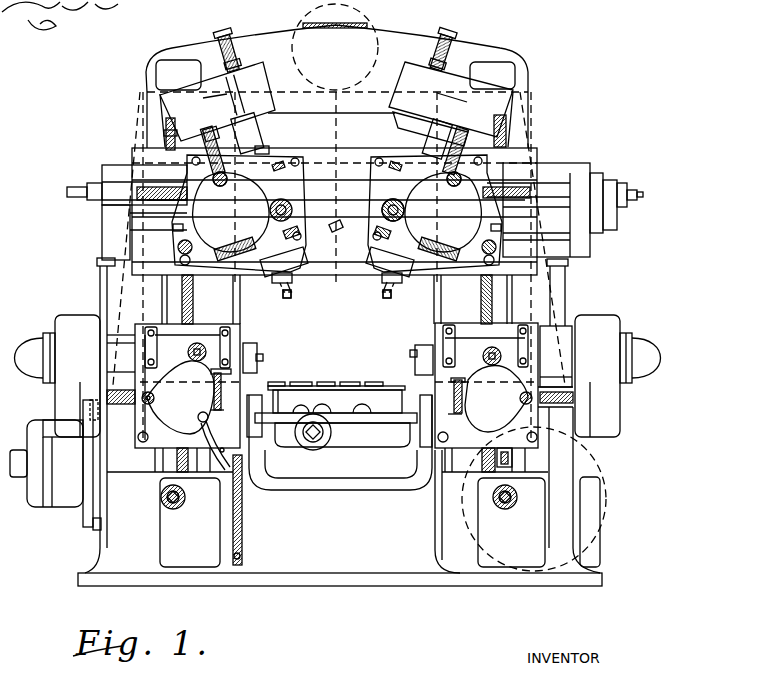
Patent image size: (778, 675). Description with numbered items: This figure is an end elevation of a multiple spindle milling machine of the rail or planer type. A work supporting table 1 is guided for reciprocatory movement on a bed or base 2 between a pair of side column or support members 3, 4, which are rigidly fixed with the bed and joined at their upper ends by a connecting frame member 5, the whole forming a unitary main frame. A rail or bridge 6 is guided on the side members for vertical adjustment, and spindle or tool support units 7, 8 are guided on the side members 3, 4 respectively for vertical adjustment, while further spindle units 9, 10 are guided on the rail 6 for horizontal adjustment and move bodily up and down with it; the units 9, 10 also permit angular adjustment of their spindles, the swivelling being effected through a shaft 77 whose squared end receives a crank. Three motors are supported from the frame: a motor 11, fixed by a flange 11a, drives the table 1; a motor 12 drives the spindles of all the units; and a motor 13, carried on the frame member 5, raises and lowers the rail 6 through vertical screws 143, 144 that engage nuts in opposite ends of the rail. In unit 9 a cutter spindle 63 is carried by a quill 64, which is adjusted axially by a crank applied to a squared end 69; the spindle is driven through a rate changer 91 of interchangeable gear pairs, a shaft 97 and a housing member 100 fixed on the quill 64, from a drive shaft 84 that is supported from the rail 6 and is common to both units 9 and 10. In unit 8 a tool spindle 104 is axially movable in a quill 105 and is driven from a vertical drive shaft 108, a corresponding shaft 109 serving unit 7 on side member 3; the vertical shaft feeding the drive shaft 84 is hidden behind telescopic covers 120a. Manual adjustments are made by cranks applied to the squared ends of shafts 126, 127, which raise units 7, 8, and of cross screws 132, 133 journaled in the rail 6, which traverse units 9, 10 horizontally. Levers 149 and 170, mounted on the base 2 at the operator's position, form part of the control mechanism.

The work supporting table 1 is at (330, 383).
The bed or base 2 is at (352, 575).
The side column or support member 3 is at (148, 291).
The side column or support member 4 is at (532, 297).
The connecting frame member 5 is at (394, 41).
The rail or bridge 6 is at (325, 176).
The spindle or tool support unit 7 is at (243, 347).
The spindle or tool support unit 8 is at (435, 340).
The spindle or tool support unit 9 is at (296, 272).
The spindle or tool support unit 10 is at (360, 272).
The motor 11 is at (63, 492).
The flange 11a is at (95, 530).
The motor 12 is at (590, 493).
The motor 13 is at (349, 13).
The cutter spindle or support member 63 is at (316, 298).
The quill member 64 is at (260, 146).
The squared end 69 is at (337, 185).
The shaft 77 is at (337, 226).
The drive shaft 84 is at (348, 212).
The rate changer 91 is at (414, 208).
The shaft 97 is at (214, 136).
The housing member 100 is at (266, 108).
The tool spindle or support 104 is at (259, 358).
The quill 105 is at (550, 358).
The vertical drive shaft 108 is at (474, 305).
The drive shaft 109 is at (193, 313).
The telescopic covers 120a is at (565, 318).
The shaft 126 is at (190, 503).
The shaft 127 is at (513, 503).
The cross screw 132 is at (135, 185).
The cross screw 133 is at (556, 195).
The vertical screw 143 is at (168, 138).
The vertical screw 144 is at (508, 130).
The lever 149 is at (215, 400).
The lever 170 is at (201, 416).